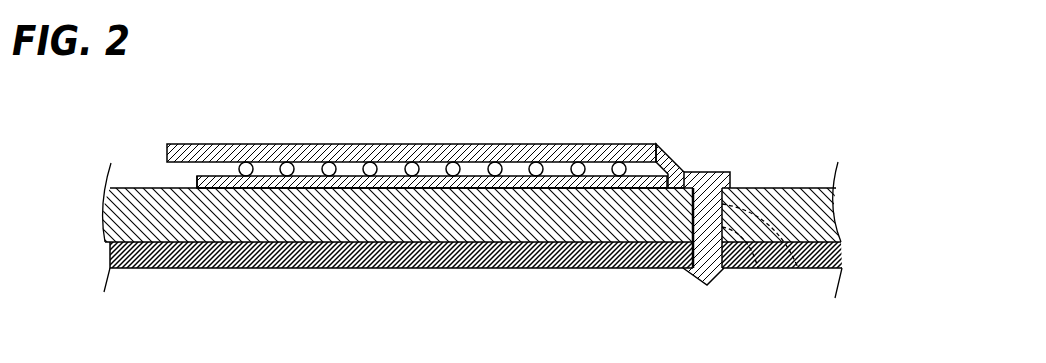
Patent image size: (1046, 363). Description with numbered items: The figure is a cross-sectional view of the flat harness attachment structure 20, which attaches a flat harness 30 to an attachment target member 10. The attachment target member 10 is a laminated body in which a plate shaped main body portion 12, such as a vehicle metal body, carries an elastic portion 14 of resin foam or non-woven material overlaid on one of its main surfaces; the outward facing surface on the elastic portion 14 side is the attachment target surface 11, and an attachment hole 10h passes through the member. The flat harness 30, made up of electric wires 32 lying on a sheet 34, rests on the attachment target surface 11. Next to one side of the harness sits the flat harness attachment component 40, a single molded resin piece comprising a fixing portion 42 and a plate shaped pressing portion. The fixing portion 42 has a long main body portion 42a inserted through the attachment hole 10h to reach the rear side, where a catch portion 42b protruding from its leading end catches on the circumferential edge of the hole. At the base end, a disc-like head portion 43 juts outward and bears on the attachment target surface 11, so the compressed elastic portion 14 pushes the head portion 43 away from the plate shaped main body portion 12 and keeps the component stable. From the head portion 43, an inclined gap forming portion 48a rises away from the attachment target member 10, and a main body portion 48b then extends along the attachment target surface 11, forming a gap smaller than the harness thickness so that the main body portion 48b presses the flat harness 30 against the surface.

The attachment target member 10 is at (790, 184).
The attachment hole 10h is at (700, 280).
The attachment target surface 11 is at (550, 178).
The plate shaped main body portion 12 is at (828, 256).
The elastic portion 14 is at (823, 212).
The flat harness attachment structure 20 is at (543, 94).
The flat harness 30 is at (208, 176).
The electric wires 32 is at (324, 165).
The sheet 34 is at (195, 182).
The flat harness attachment component 40 is at (728, 169).
The fixing portion 42 is at (752, 244).
The long main body portion 42a is at (797, 252).
The catch portion 42b is at (725, 272).
The head portion 43 is at (698, 171).
The gap forming portion 48a is at (671, 158).
The main body portion 48b is at (413, 144).